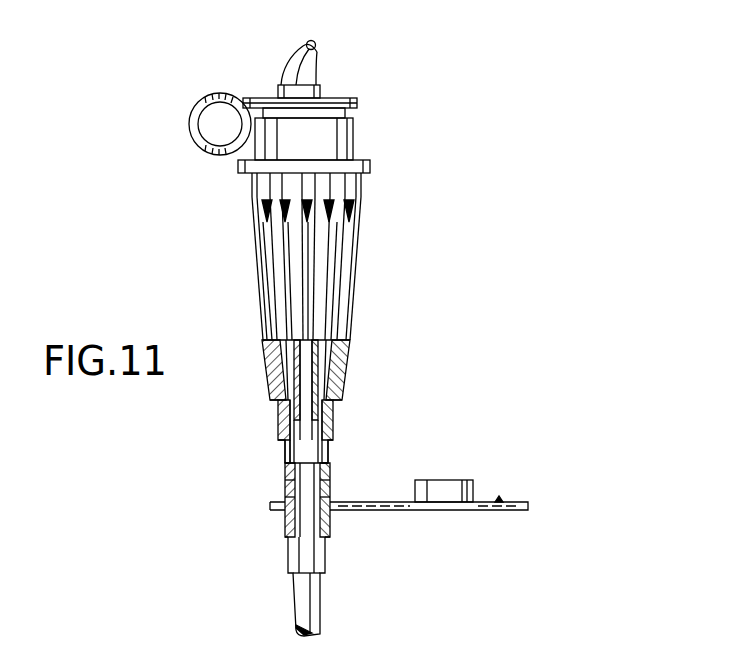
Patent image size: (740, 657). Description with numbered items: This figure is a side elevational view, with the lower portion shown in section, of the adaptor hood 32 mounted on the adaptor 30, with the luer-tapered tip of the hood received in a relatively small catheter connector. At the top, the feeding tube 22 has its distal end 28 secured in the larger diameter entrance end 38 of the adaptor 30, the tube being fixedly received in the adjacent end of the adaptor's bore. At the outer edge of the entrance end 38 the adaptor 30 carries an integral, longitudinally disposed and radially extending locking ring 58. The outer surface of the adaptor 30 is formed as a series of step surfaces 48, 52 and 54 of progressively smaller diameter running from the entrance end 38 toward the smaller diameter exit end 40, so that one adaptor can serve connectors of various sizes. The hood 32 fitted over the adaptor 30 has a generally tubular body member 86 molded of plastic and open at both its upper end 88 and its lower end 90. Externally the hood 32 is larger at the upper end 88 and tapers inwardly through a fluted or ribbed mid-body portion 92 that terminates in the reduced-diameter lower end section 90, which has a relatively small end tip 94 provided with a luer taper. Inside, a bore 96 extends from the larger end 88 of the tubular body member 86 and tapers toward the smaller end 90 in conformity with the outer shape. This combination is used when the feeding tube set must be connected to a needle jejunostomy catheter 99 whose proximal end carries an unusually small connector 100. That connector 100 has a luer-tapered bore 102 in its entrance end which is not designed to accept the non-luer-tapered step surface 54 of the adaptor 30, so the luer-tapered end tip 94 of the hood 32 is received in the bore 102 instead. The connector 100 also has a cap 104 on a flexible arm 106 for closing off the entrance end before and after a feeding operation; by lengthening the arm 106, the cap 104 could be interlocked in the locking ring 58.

The feeding tube 22 is at (318, 62).
The distal end 28 is at (285, 58).
The adaptor 30 is at (352, 99).
The adaptor hood 32 is at (360, 243).
The entrance end 38 is at (277, 87).
The exit end 40 is at (283, 458).
The step surface 48 is at (356, 113).
The step surface 52 is at (350, 368).
The step surface 54 is at (340, 418).
The locking ring 58 is at (189, 125).
The tubular body member 86 is at (358, 183).
The upper end 88 is at (357, 143).
The lower end 90 is at (337, 437).
The fluted or ribbed mid-body portion 92 is at (250, 253).
The end tip 94 is at (330, 483).
The bore 96 is at (345, 337).
The needle jejunostomy catheter 99 is at (322, 608).
The connector 100 is at (280, 497).
The luer-tapered bore 102 is at (282, 470).
The cap 104 is at (475, 487).
The flexible arm 106 is at (400, 511).